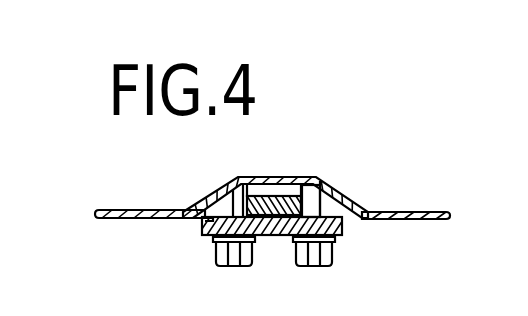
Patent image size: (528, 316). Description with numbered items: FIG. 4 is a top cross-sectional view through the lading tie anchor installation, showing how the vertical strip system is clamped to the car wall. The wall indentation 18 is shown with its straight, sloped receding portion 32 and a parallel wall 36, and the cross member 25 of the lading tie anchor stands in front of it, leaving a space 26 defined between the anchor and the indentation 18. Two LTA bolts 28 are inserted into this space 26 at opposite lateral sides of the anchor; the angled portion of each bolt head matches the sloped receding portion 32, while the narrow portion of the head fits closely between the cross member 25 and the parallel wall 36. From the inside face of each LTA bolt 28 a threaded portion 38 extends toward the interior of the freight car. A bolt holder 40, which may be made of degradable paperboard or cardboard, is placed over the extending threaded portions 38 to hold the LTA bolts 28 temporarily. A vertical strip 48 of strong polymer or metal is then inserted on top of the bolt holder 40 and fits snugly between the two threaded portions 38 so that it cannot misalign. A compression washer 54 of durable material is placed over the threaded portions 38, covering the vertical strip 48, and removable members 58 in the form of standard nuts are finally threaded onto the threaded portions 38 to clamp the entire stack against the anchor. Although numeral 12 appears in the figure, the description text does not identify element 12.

The rail 12 is at (443, 212).
The indentation 18 is at (378, 172).
The cross member 25 is at (310, 197).
The space 26 is at (350, 241).
The LTA bolt 28 is at (247, 180).
The receding portion 32 is at (218, 192).
The parallel wall 36 is at (262, 181).
The threaded portion 38 is at (238, 197).
The bolt holder 40 is at (207, 221).
The vertical strip 48 is at (268, 240).
The compression washer 54 is at (345, 243).
The removable member 58 is at (334, 258).